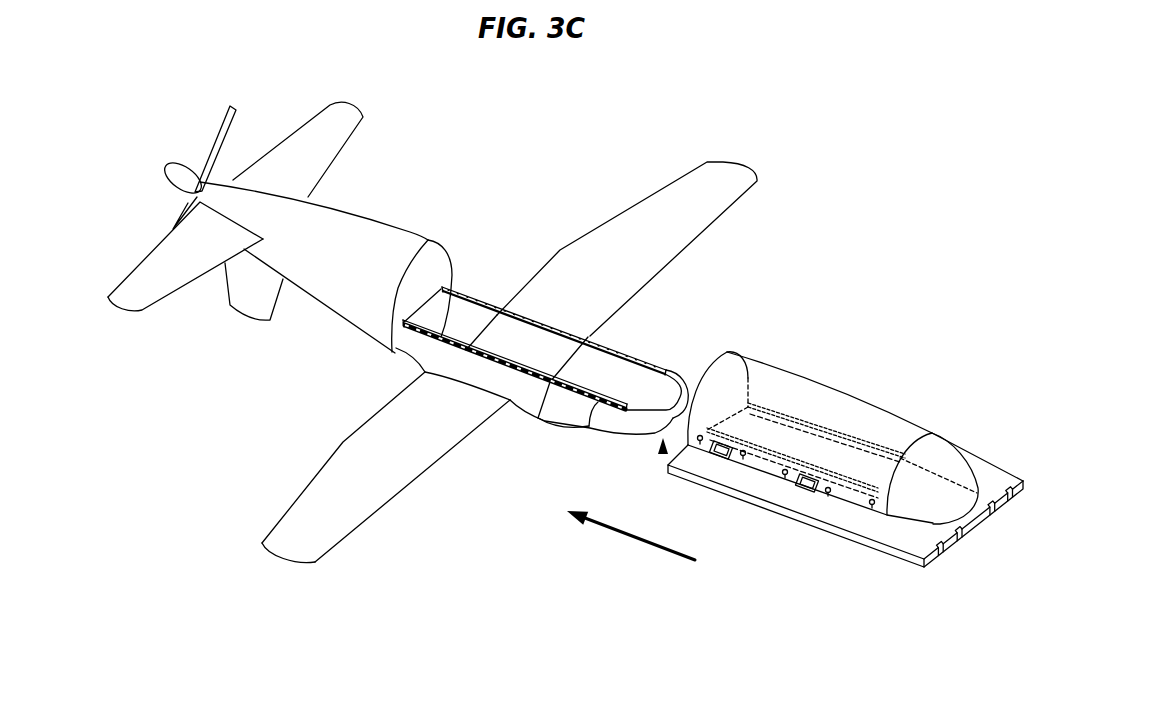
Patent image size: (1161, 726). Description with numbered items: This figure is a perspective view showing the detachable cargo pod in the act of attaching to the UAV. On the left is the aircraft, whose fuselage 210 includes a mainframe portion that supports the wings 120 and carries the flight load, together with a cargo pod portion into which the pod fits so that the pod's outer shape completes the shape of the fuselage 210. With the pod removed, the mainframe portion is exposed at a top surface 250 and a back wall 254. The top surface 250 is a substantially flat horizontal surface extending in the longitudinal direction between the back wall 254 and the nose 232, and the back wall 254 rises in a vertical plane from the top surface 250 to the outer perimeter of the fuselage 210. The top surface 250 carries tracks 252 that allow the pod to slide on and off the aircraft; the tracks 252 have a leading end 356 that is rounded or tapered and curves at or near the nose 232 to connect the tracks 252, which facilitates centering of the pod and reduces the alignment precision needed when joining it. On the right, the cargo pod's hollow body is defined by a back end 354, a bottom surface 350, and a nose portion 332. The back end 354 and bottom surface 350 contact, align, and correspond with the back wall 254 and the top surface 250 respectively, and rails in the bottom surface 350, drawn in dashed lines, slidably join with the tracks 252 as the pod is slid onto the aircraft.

The fuselage 210 is at (432, 332).
The wings 120 is at (325, 487).
The back wall 254 is at (406, 292).
The top surface 250 is at (417, 343).
The tracks 252 is at (475, 302).
The leading end 356 is at (683, 385).
The nose 232 is at (662, 450).
The back end 354 is at (728, 378).
The bottom surface 350 is at (851, 506).
The nose portion 332 is at (984, 533).